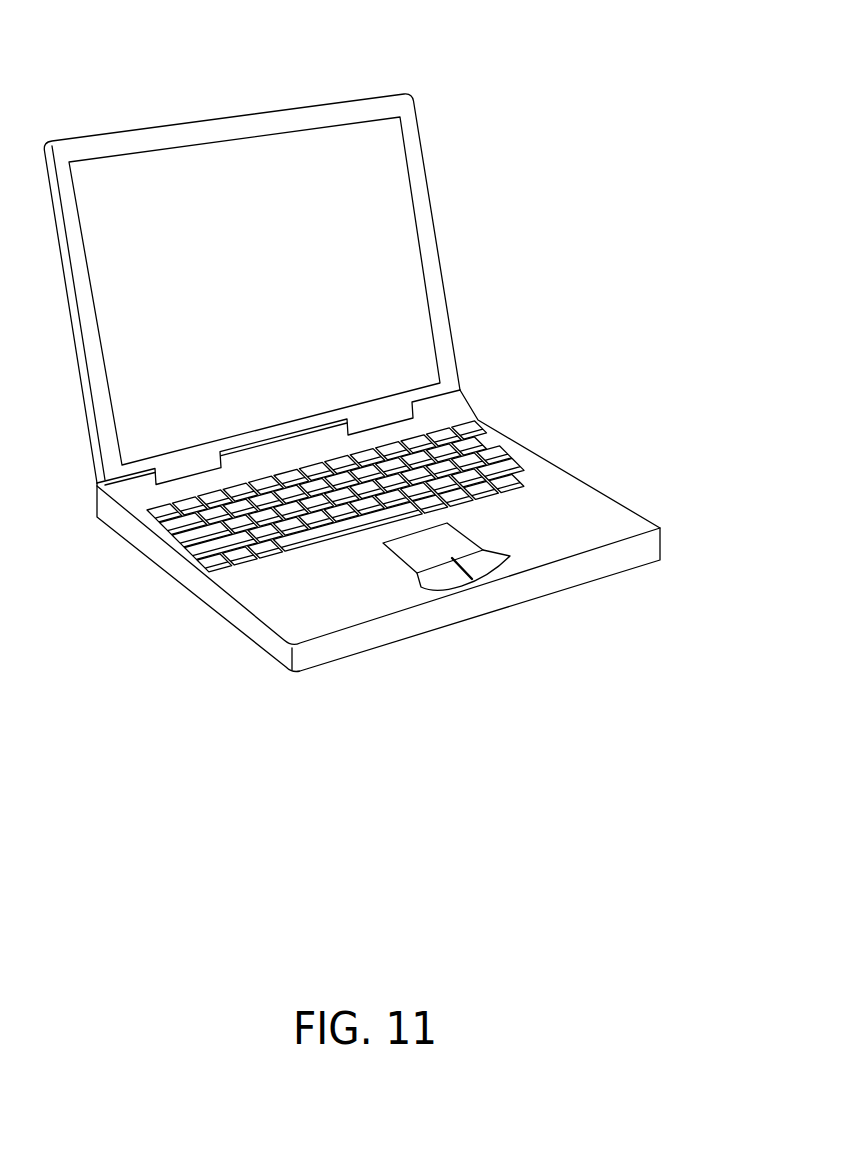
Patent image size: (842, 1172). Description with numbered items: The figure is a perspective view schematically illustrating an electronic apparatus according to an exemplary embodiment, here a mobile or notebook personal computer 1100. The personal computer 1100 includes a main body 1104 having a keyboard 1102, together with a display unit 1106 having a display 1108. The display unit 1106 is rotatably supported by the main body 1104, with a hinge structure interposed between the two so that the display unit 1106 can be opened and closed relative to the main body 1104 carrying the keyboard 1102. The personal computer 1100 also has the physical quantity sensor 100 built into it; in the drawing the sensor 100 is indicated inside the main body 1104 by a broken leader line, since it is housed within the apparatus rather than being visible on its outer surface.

The personal computer 1100 is at (454, 77).
The keyboard 1102 is at (498, 453).
The main body 1104 is at (362, 608).
The display unit 1106 is at (436, 222).
The display 1108 is at (243, 163).
The physical quantity sensor 100 is at (583, 517).